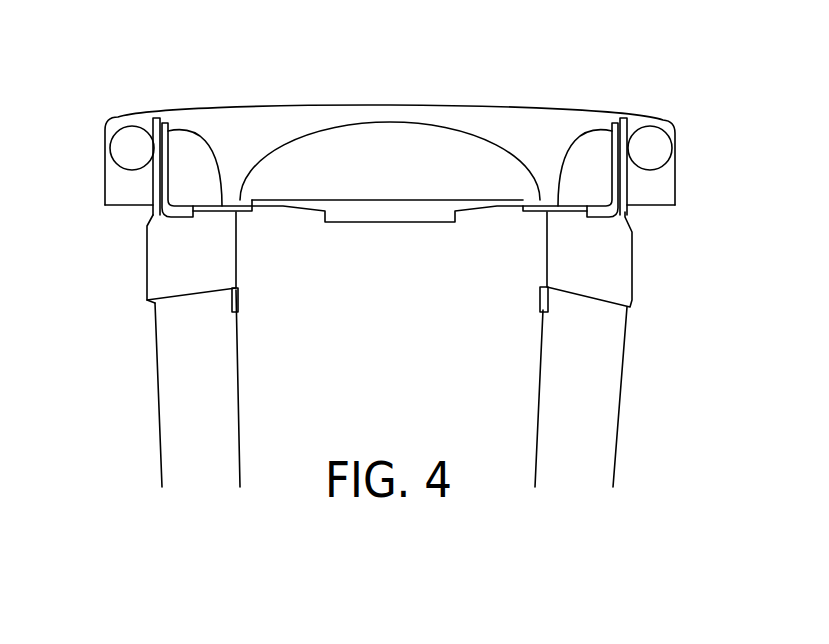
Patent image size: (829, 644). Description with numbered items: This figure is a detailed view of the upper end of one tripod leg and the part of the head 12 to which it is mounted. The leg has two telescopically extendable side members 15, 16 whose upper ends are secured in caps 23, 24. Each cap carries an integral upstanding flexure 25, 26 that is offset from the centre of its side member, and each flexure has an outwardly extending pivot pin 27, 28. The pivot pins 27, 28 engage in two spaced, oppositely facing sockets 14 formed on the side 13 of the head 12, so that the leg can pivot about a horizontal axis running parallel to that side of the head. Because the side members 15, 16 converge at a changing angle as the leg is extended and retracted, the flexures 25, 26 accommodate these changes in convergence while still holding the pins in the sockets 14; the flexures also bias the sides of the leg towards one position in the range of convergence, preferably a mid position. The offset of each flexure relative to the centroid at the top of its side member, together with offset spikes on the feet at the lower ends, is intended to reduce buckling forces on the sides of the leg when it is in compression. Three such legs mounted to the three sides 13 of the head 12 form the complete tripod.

The triangular head 12 is at (127, 116).
The side of the head 13 is at (387, 108).
The sockets 14 is at (127, 167).
The side member 15 is at (156, 411).
The side member 16 is at (618, 405).
The cap 23 is at (147, 280).
The cap 24 is at (633, 285).
The flexure 25 is at (153, 157).
The flexure 26 is at (628, 160).
The pivot pin 27 is at (170, 143).
The pivot pin 28 is at (613, 150).